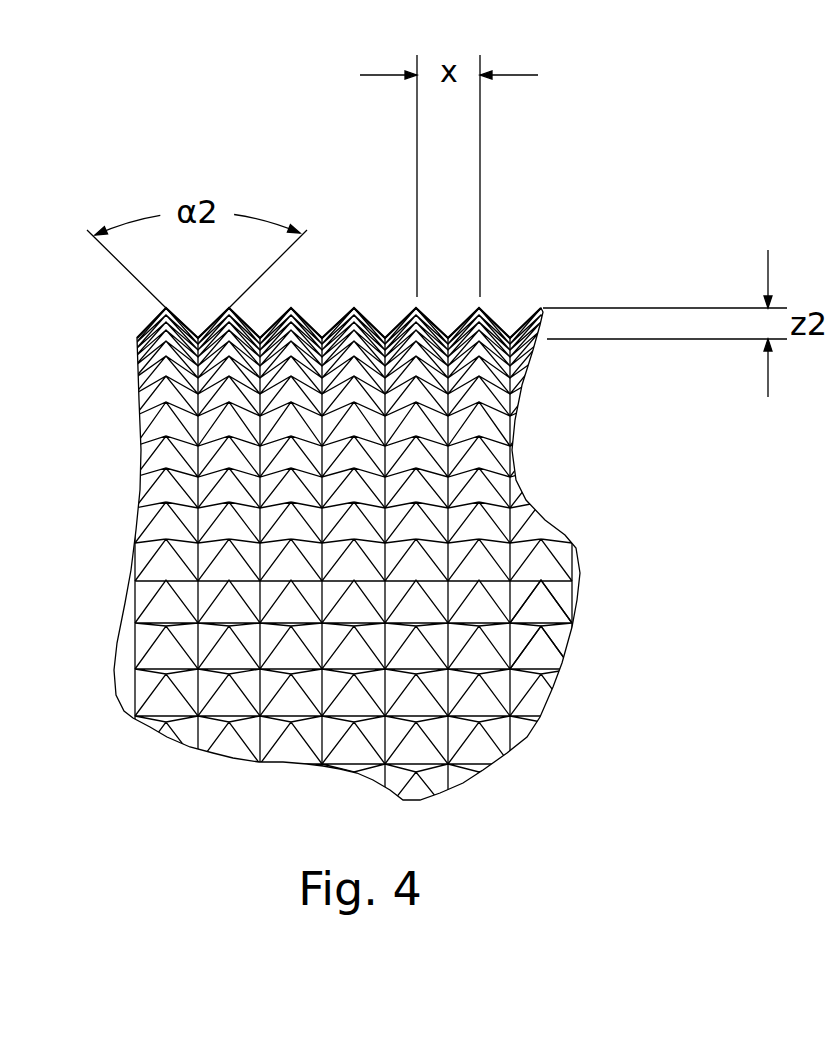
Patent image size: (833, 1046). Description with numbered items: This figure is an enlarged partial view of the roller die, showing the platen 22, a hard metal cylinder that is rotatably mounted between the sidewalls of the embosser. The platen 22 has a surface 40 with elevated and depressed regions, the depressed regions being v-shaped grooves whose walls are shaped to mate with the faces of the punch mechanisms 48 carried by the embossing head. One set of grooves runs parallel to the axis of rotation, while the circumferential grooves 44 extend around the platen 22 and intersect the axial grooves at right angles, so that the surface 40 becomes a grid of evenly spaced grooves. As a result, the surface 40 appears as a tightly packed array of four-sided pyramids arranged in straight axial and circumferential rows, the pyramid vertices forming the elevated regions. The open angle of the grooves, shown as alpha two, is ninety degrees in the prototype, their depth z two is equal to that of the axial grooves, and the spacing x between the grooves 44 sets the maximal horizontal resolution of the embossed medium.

The platen 22 is at (523, 447).
The surface 40 is at (537, 698).
The circumferential grooves 44 is at (387, 317).
The punch mechanisms 48 is at (556, 637).